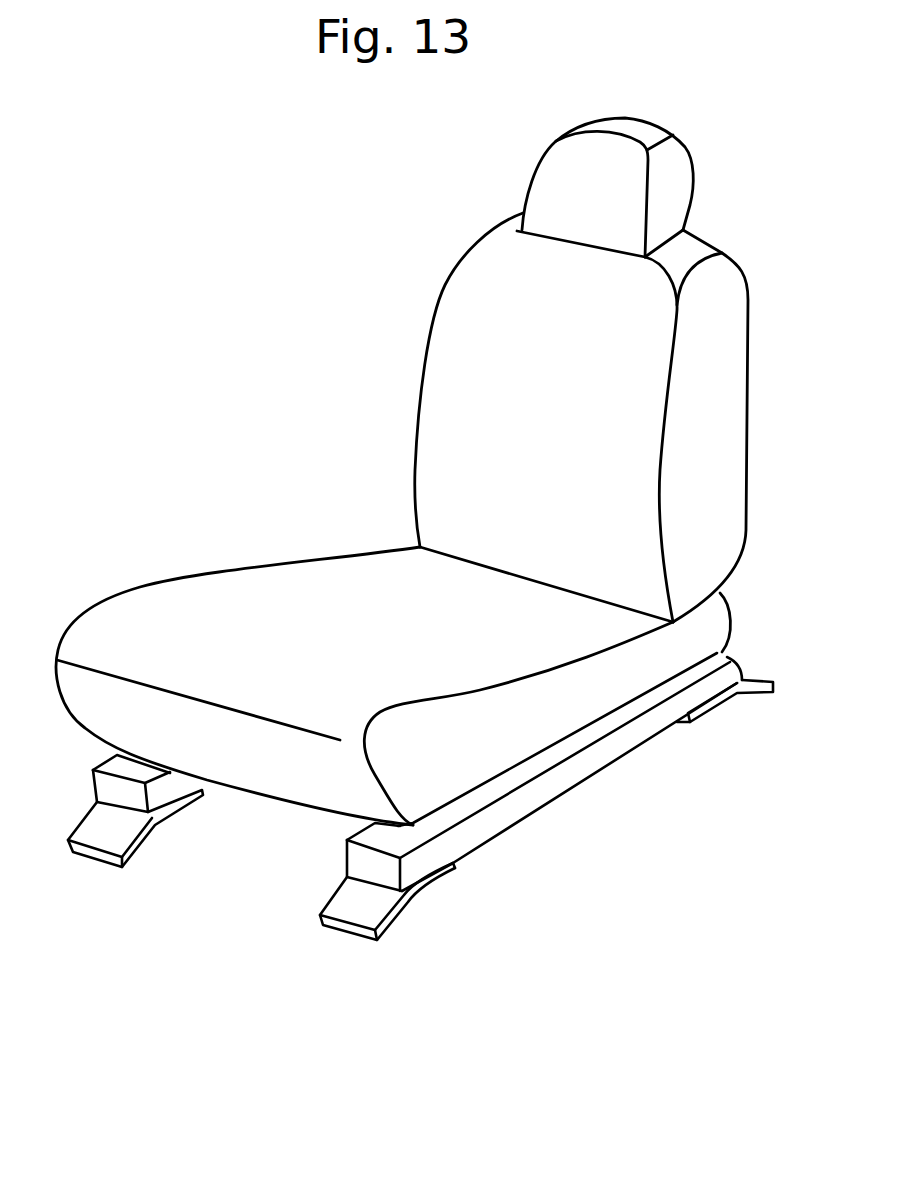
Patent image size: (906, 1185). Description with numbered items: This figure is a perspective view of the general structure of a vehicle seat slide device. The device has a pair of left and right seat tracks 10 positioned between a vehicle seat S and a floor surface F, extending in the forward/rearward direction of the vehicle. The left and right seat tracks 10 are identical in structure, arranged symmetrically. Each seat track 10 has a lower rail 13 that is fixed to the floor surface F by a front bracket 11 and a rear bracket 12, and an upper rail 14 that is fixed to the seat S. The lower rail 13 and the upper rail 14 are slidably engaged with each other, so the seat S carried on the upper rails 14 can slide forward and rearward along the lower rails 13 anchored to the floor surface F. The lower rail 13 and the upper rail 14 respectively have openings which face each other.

The vehicle seat S is at (463, 382).
The seat track 10 is at (237, 805).
The front bracket 11 is at (112, 830).
The rear bracket 12 is at (755, 688).
The lower rail 13 is at (558, 778).
The upper rail 14 is at (507, 773).
The floor surface F is at (433, 917).